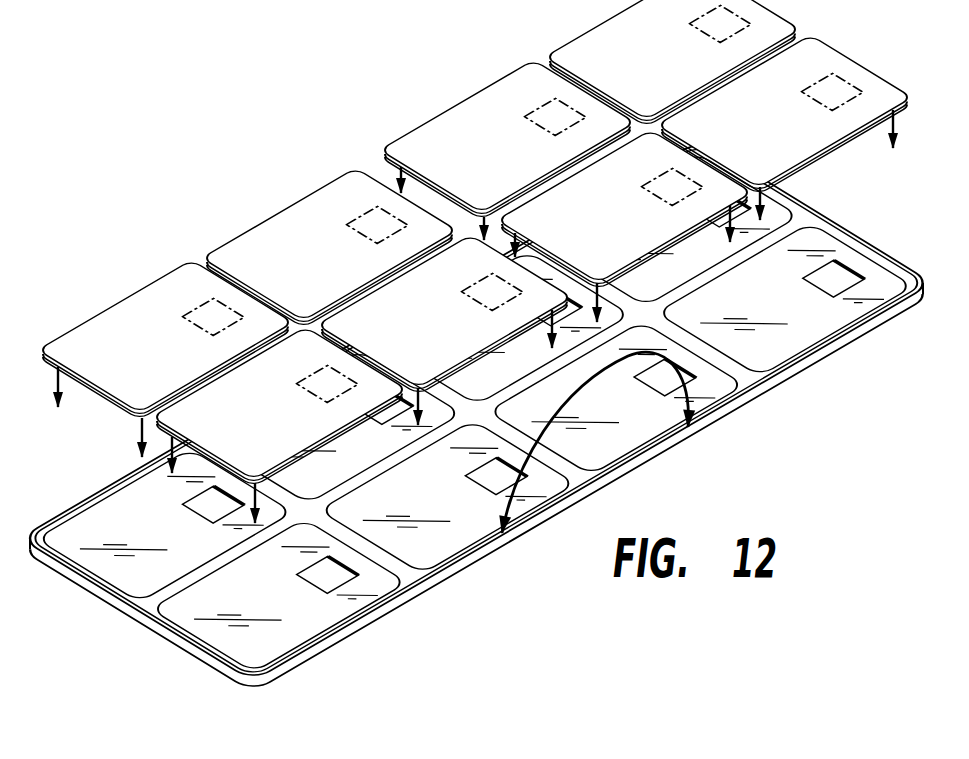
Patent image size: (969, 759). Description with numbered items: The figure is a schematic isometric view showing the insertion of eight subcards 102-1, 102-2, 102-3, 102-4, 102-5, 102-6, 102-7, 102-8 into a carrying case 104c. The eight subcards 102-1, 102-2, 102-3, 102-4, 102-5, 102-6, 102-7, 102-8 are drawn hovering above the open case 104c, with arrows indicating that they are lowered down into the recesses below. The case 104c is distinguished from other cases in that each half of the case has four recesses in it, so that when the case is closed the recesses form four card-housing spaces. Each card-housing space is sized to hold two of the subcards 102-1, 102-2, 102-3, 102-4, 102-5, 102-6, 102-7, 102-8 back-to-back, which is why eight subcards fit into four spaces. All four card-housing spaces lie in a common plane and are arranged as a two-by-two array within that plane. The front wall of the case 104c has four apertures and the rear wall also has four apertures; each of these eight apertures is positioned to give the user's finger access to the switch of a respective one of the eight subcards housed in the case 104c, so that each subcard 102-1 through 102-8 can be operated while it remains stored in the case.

The subcard 102-1 is at (684, 61).
The subcard 102-2 is at (797, 129).
The subcard 102-3 is at (634, 224).
The subcard 102-4 is at (521, 157).
The subcard 102-5 is at (342, 262).
The subcard 102-6 is at (456, 331).
The subcard 102-7 is at (177, 356).
The subcard 102-8 is at (292, 426).
The carrying case 104c is at (776, 397).